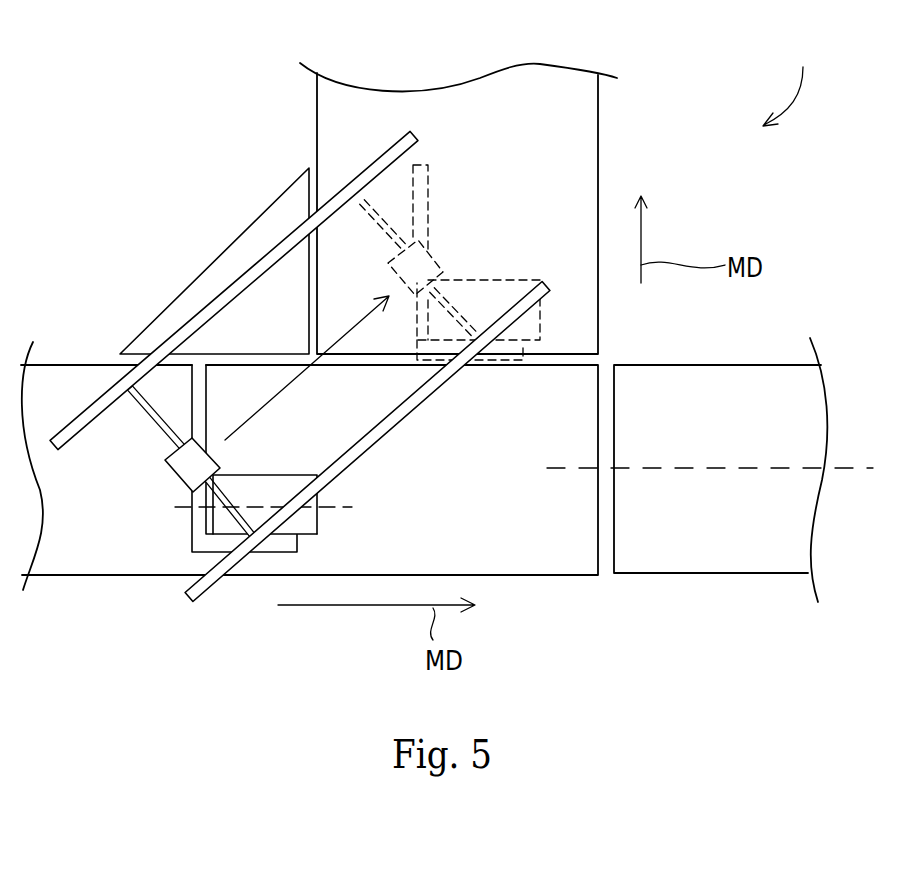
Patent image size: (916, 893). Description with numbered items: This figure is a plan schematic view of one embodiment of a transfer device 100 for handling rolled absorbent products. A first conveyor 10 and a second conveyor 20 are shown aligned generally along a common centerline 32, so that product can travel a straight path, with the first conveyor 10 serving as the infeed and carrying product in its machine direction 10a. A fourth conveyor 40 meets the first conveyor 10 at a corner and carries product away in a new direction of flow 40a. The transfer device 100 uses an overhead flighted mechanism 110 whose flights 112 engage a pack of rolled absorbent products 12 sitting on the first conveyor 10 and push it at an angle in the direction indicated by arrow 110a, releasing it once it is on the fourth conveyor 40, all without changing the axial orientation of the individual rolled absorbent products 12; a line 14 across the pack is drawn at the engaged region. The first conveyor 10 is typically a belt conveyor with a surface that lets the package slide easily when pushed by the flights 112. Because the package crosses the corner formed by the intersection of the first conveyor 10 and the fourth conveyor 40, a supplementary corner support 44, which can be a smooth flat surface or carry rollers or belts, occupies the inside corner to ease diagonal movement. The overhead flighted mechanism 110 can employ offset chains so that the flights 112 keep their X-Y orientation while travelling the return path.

The first transfer device 100 is at (791, 82).
The first conveyor 10 is at (63, 562).
The first web machine direction 10a is at (317, 607).
The rolled absorbent products 12 is at (315, 522).
The web splice line 14 is at (335, 505).
The second conveyor 20 is at (718, 560).
The common centerline 32 is at (835, 470).
The fourth conveyor 40 is at (598, 146).
The new direction of flow 40a is at (641, 240).
The supplementary corner support 44 is at (178, 308).
The overhead flighted mechanism 110 is at (210, 583).
The direction of movement arrow 110a is at (276, 396).
The flights 112 is at (192, 532).